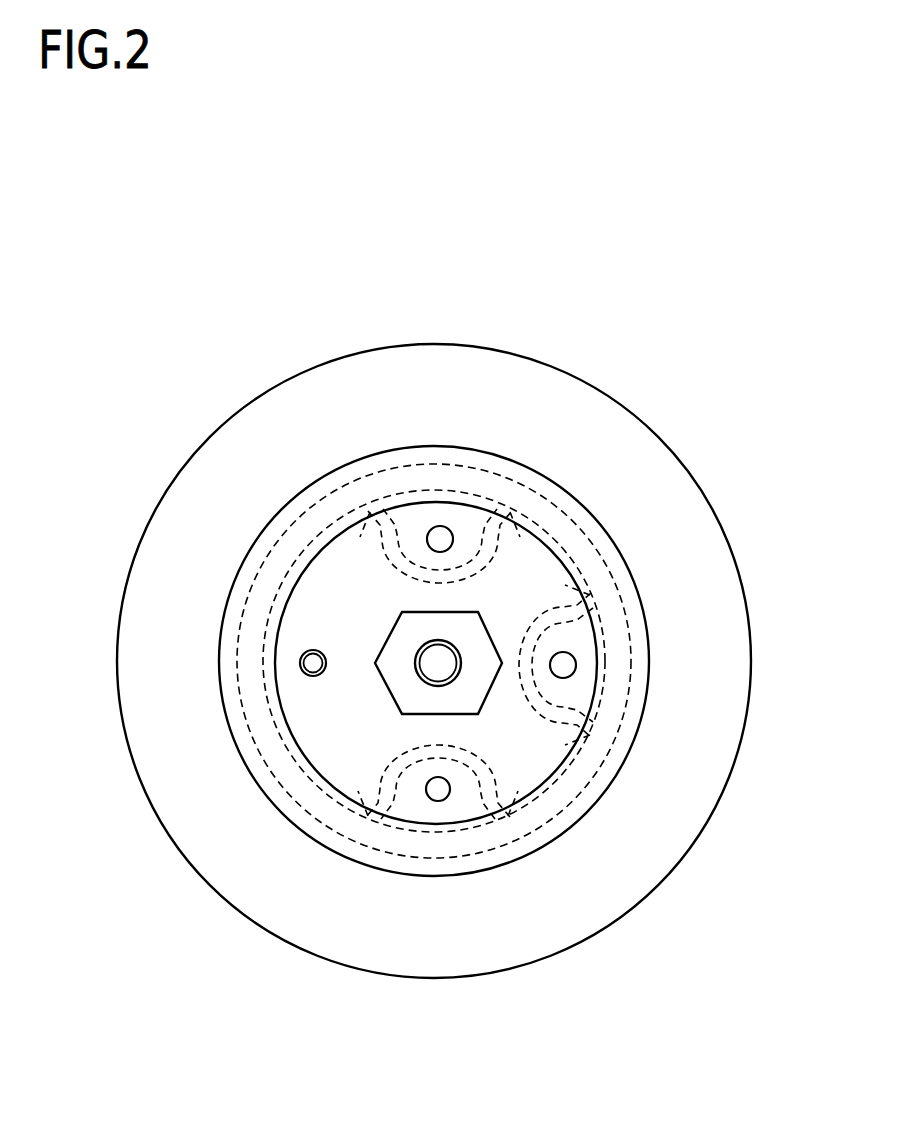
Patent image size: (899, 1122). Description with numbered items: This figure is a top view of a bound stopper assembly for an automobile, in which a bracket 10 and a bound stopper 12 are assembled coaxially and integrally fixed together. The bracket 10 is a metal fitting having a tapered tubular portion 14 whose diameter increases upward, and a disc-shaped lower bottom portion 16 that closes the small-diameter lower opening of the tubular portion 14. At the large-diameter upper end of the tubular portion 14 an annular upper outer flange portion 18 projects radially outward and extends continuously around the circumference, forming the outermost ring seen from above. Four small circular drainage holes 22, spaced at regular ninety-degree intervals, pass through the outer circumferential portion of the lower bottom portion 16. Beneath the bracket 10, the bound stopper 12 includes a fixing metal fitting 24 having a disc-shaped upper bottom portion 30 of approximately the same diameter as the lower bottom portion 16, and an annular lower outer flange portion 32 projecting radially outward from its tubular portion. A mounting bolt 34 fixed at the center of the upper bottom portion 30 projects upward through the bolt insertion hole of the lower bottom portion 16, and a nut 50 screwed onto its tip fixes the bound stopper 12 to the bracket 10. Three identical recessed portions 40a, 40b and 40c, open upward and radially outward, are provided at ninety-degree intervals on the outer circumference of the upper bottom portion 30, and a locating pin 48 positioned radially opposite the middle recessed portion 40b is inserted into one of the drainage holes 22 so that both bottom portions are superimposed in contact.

The bracket 10 is at (576, 326).
The bound stopper 12 is at (482, 556).
The tubular portion 14 is at (456, 704).
The lower bottom portion 16 is at (350, 744).
The upper outer flange portion 18 is at (260, 415).
The drainage holes 22 is at (436, 534).
The fixing metal fitting 24 is at (375, 450).
The upper bottom portion 30 is at (550, 530).
The lower outer flange portion 32 is at (537, 503).
The mounting bolt 34 is at (436, 664).
The recessed portion 40a is at (481, 538).
The recessed portion 40b is at (562, 700).
The recessed portion 40c is at (474, 790).
The locating pin 48 is at (310, 666).
The nut 50 is at (404, 645).